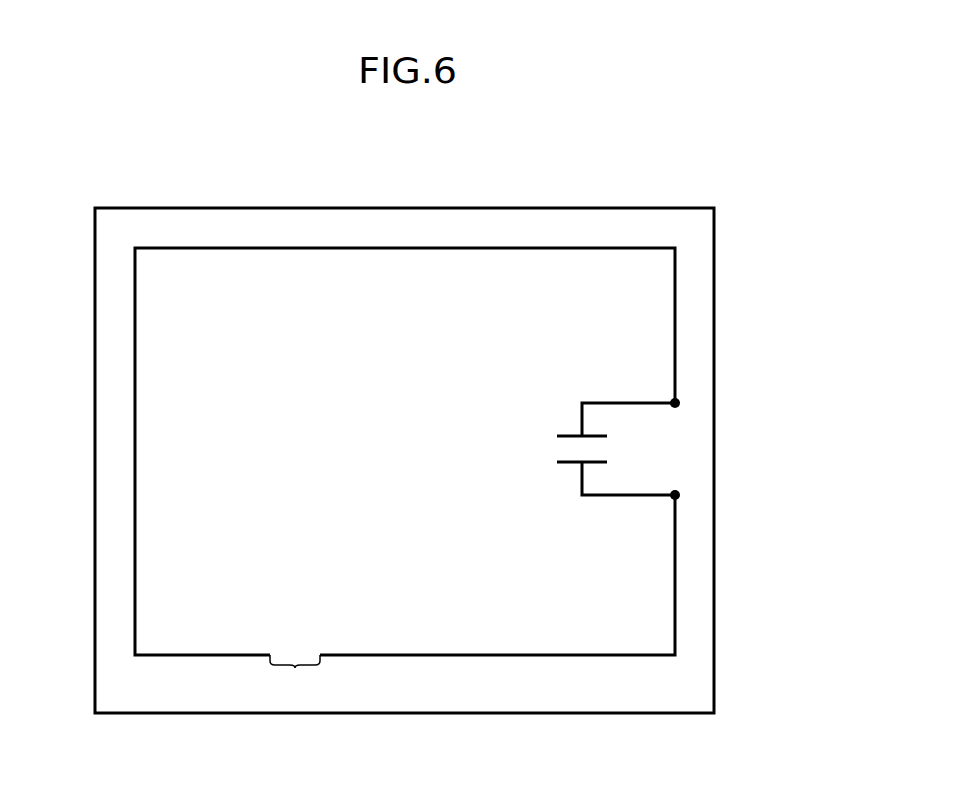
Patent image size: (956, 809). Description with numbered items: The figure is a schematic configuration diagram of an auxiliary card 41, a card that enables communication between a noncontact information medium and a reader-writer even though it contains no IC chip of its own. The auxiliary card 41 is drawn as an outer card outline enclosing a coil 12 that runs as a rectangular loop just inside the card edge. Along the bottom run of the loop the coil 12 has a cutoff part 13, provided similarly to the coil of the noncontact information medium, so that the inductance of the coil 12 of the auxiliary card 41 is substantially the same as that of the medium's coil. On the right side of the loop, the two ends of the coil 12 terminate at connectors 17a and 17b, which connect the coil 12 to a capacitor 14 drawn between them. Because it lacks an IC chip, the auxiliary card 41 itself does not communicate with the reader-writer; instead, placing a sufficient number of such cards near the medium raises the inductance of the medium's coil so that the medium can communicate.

The auxiliary card 41 is at (692, 156).
The coil 12 is at (522, 656).
The cutoff part 13 is at (295, 669).
The capacitor 14 is at (608, 447).
The connector 17a is at (679, 401).
The connector 17b is at (679, 498).